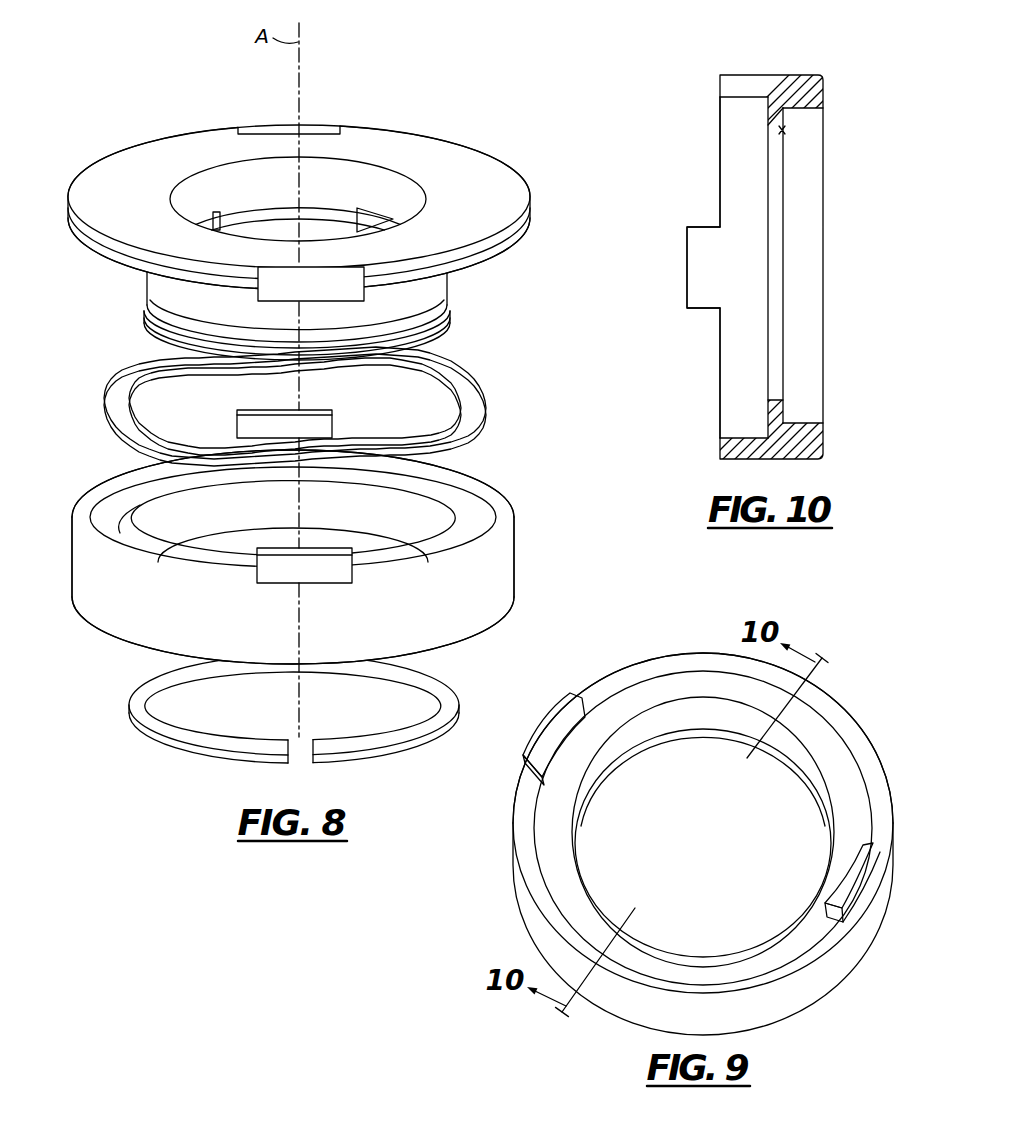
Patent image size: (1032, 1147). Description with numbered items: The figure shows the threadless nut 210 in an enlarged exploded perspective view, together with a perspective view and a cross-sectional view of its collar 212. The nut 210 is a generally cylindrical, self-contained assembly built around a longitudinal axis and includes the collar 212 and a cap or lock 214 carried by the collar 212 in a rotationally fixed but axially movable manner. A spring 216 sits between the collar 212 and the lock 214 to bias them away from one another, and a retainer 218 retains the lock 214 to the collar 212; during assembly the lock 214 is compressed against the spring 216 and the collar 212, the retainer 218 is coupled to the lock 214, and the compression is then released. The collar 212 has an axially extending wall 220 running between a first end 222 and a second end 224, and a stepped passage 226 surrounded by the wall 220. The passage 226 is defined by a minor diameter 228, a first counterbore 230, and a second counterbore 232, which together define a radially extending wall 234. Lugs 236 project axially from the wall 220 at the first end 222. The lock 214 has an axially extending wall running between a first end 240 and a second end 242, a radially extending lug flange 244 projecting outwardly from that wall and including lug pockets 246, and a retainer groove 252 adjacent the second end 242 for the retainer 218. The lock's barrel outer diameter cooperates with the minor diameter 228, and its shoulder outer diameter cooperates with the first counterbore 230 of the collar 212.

In FIG. 8, the nut 210 is at (332, 62).
In FIG. 8, the collar 212 is at (298, 547).
In FIG. 9, the collar 212 is at (673, 853).
In FIG. 10, the collar 212 is at (785, 242).
In FIG. 8, the lock 214 is at (292, 233).
In FIG. 8, the spring 216 is at (80, 397).
In FIG. 8, the retainer 218 is at (440, 311).
In FIG. 8, the axially extending wall 220 is at (513, 560).
In FIG. 9, the axially extending wall 220 is at (512, 820).
In FIG. 10, the axially extending wall 220 is at (780, 82).
In FIG. 8, the first end 222 is at (480, 475).
In FIG. 9, the first end 222 is at (847, 720).
In FIG. 10, the first end 222 is at (720, 116).
In FIG. 8, the second end 224 is at (460, 640).
In FIG. 9, the second end 224 is at (813, 1000).
In FIG. 10, the second end 224 is at (825, 120).
In FIG. 8, the stepped passage 226 is at (210, 562).
In FIG. 9, the stepped passage 226 is at (665, 856).
In FIG. 10, the stepped passage 226 is at (740, 187).
In FIG. 8, the minor diameter 228 is at (385, 520).
In FIG. 9, the minor diameter 228 is at (780, 755).
In FIG. 10, the minor diameter 228 is at (777, 345).
In FIG. 8, the first counterbore 230 is at (117, 490).
In FIG. 9, the first counterbore 230 is at (657, 688).
In FIG. 10, the first counterbore 230 is at (743, 437).
In FIG. 10, the second counterbore 232 is at (802, 423).
In FIG. 8, the radially extending wall 234 is at (120, 533).
In FIG. 9, the radially extending wall 234 is at (700, 717).
In FIG. 10, the radially extending wall 234 is at (782, 128).
In FIG. 8, the lugs 236 is at (275, 423).
In FIG. 9, the lugs 236 is at (557, 717).
In FIG. 10, the lugs 236 is at (703, 280).
In FIG. 8, the first end 240 is at (299, 177).
In FIG. 8, the second end 242 is at (330, 360).
In FIG. 8, the lug flange 244 is at (470, 173).
In FIG. 8, the lug pockets 246 is at (295, 295).
In FIG. 8, the retainer groove 252 is at (160, 318).